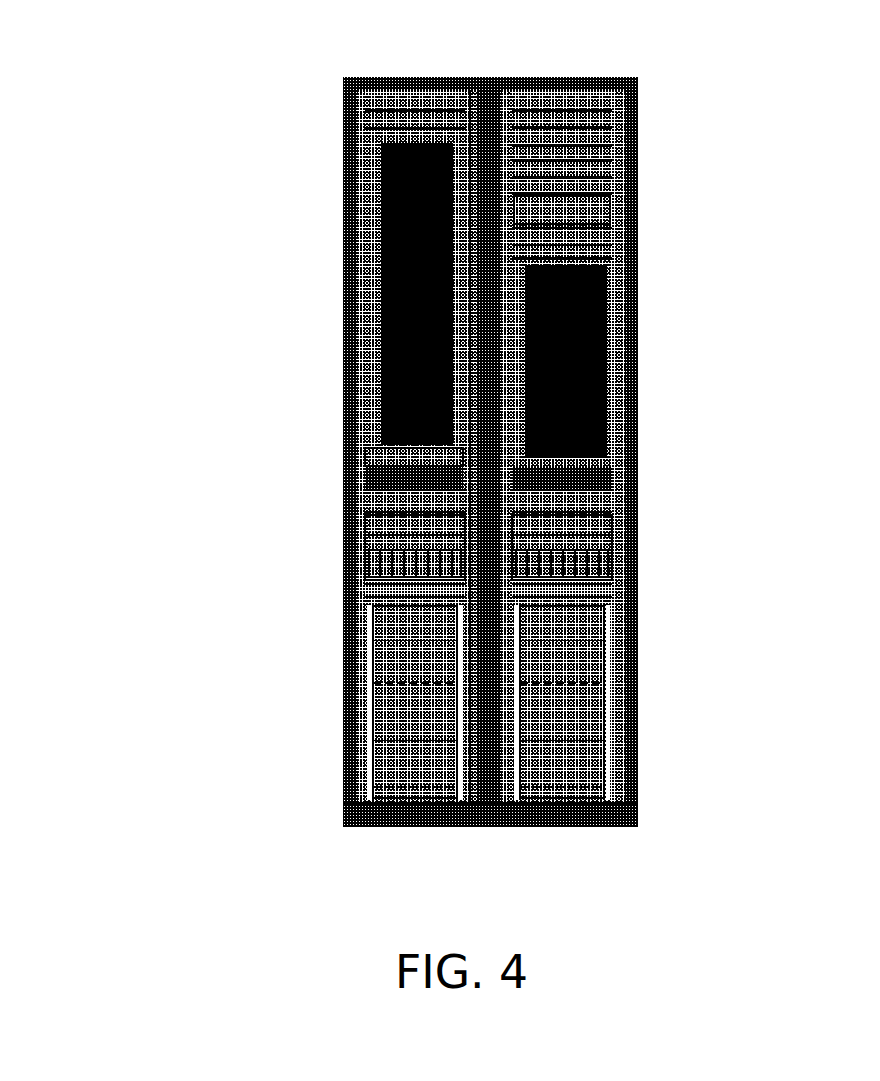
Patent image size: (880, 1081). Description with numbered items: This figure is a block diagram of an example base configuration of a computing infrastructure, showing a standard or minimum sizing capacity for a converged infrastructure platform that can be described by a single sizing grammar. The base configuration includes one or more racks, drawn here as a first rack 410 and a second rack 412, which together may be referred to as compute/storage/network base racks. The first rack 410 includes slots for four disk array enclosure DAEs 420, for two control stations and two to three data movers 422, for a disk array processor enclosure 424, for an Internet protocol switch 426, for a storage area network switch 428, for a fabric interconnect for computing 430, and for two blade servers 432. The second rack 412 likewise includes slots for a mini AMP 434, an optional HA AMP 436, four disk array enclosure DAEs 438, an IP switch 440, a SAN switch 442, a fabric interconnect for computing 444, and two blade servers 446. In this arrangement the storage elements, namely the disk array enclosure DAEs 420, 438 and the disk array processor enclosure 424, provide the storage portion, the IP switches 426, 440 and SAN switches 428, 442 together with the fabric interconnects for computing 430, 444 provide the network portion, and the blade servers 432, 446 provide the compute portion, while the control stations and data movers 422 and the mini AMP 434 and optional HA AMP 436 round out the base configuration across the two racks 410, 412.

The first server rack 410 is at (415, 62).
The second server rack 412 is at (563, 62).
The first rack section (upper server units) 420 is at (327, 115).
The second rack section 422 is at (327, 297).
The third rack section 424 is at (327, 397).
The fourth rack section 426 is at (327, 468).
The fifth rack section 428 is at (415, 501).
The sixth rack section (switch panel) 430 is at (327, 545).
The seventh rack section (lower cabinet) 432 is at (327, 602).
The first section of second rack 434 is at (649, 92).
The second section of second rack 436 is at (728, 92).
The third section of second rack (panel) 438 is at (654, 268).
The fourth section of second rack 440 is at (654, 462).
The fifth section of second rack 442 is at (562, 501).
The sixth section of second rack (switch panel) 444 is at (654, 542).
The seventh section of second rack (lower cabinet) 446 is at (654, 597).